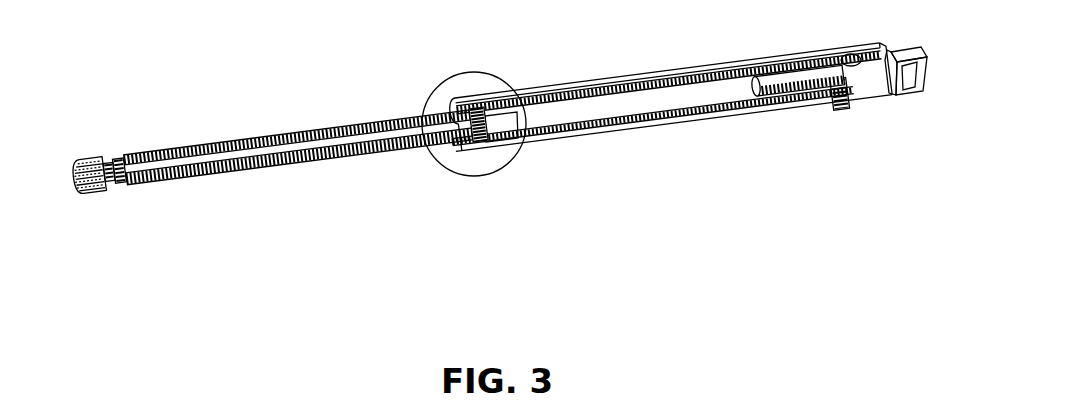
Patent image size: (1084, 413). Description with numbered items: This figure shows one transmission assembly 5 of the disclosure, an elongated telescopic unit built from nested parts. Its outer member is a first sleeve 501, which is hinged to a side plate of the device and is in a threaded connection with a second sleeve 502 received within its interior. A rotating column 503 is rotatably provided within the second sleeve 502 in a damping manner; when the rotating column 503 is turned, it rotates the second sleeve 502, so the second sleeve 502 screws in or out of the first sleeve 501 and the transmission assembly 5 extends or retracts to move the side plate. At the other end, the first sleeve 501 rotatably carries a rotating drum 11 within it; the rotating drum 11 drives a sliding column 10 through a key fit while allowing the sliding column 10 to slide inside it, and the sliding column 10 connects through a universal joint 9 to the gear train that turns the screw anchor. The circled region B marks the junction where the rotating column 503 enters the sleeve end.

The transmission assembly 5 is at (577, 160).
The first sleeve 501 is at (662, 78).
The second sleeve 502 is at (355, 132).
The rotating column 503 is at (262, 152).
The universal joint 9 is at (906, 96).
The sliding column 10 is at (806, 100).
The rotating drum 11 is at (695, 120).
The enlarged detail region B is at (492, 73).